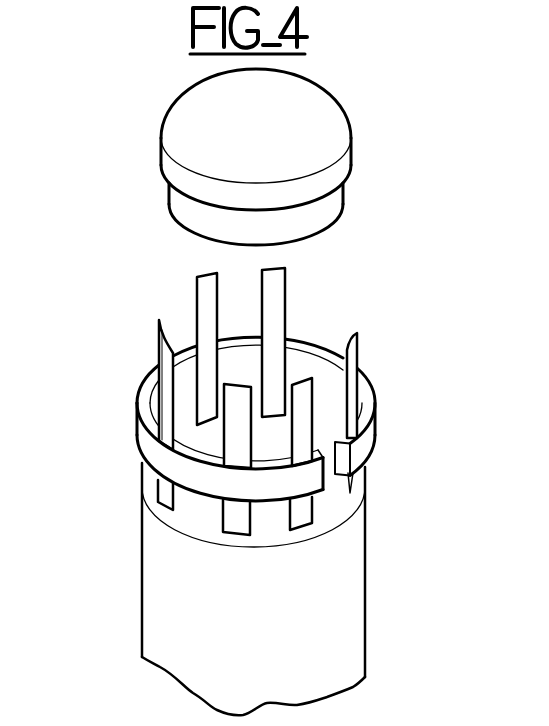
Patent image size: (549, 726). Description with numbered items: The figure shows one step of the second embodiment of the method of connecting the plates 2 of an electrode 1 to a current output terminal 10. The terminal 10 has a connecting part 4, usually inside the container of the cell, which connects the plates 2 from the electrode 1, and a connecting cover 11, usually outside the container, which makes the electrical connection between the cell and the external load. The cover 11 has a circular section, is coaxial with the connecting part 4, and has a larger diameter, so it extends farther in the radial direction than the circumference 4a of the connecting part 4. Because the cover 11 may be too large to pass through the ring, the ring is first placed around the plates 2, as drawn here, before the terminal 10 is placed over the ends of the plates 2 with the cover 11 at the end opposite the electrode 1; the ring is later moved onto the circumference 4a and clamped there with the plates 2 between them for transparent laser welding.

The electrode 1 is at (327, 598).
The plates 2 is at (277, 298).
The connecting part 4 is at (255, 176).
The circumference of the connecting part 4a is at (340, 220).
The current output terminal 10 is at (367, 84).
The connecting cover 11 is at (207, 113).